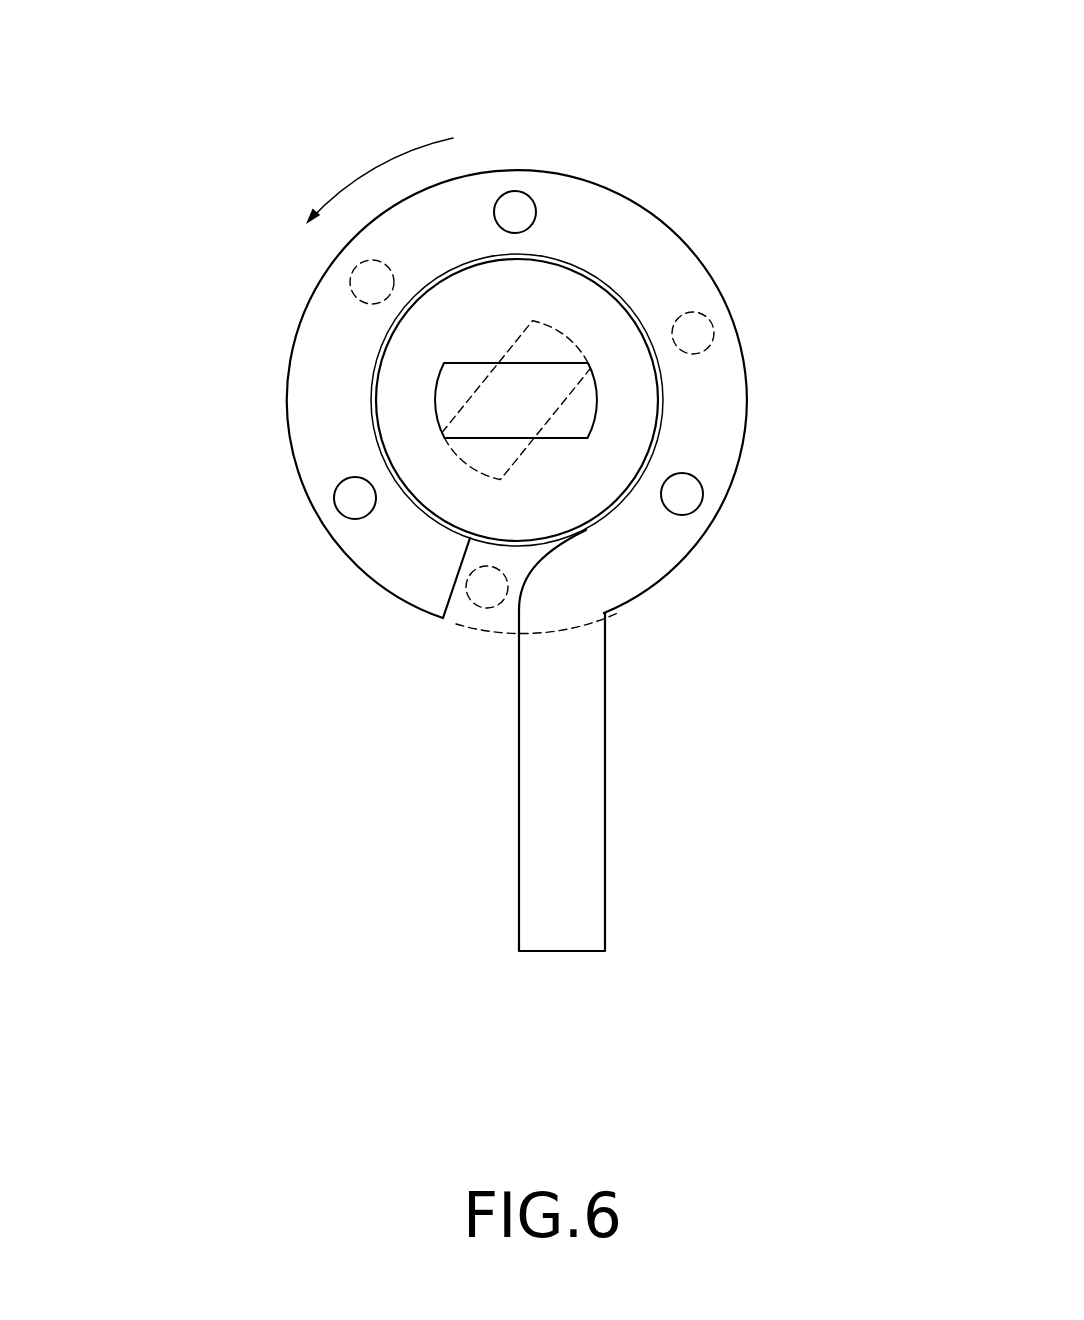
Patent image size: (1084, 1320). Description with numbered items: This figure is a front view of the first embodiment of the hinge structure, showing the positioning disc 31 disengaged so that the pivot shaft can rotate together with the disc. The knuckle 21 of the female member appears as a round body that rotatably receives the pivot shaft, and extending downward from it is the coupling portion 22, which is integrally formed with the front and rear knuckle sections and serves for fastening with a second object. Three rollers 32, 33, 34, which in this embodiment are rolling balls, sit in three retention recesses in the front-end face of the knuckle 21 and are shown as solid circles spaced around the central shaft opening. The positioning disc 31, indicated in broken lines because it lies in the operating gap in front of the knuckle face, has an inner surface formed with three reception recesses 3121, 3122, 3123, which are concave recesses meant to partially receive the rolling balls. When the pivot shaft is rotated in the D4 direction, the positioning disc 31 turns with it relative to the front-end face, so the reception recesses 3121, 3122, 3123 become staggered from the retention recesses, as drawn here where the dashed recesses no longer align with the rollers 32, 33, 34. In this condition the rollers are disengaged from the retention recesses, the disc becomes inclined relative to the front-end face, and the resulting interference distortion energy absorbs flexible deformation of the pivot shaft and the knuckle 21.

The knuckle 21 is at (317, 417).
The coupling portion 22 is at (565, 778).
The positioning disc 31 is at (503, 633).
The roller 32 is at (355, 498).
The roller 33 is at (509, 207).
The roller 34 is at (682, 491).
The reception recess 3121 is at (487, 590).
The reception recess 3122 is at (372, 282).
The reception recess 3123 is at (693, 333).
The D4 direction D4 is at (379, 164).